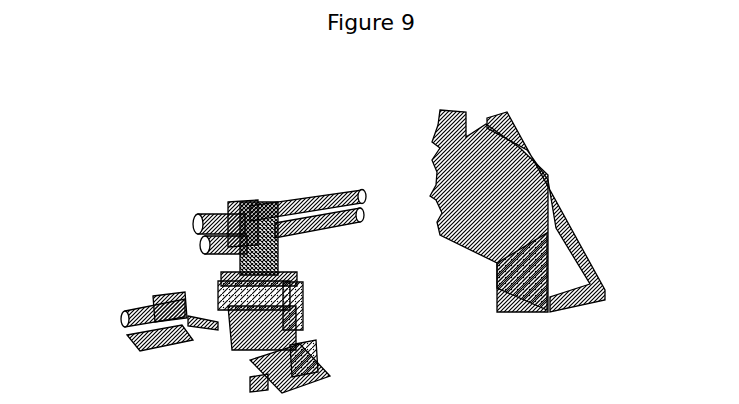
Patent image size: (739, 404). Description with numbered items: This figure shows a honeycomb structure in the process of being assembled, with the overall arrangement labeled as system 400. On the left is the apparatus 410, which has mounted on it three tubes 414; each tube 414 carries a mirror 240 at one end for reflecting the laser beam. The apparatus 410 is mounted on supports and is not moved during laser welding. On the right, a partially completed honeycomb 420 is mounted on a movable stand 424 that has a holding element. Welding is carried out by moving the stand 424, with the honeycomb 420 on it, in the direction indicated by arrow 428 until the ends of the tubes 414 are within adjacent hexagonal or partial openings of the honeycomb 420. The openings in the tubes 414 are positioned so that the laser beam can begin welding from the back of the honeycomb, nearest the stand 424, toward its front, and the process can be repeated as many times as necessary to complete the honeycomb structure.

The robotic manipulation system 400 is at (122, 77).
The apparatus 410 is at (133, 174).
The tubes 414 is at (290, 232).
The mirror 240 is at (353, 213).
The partially completed honeycomb 420 is at (450, 240).
The movable stand 424 is at (531, 272).
The arrow 428 is at (610, 333).